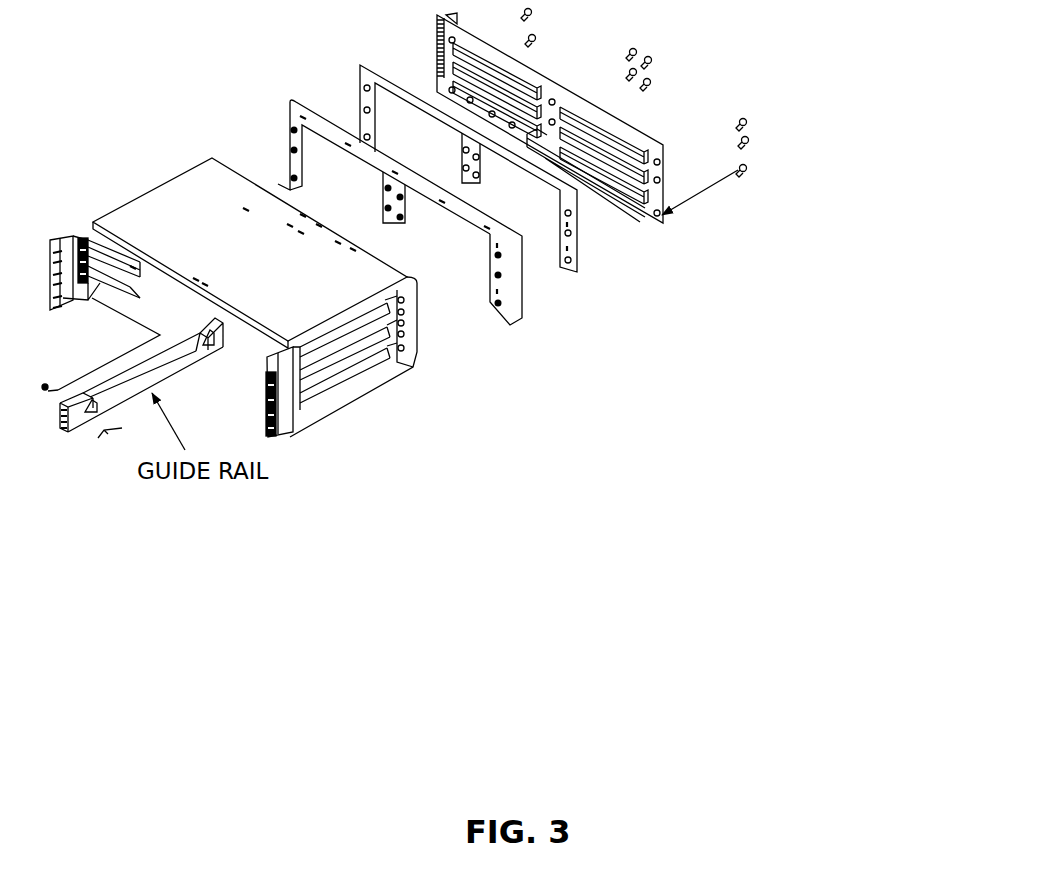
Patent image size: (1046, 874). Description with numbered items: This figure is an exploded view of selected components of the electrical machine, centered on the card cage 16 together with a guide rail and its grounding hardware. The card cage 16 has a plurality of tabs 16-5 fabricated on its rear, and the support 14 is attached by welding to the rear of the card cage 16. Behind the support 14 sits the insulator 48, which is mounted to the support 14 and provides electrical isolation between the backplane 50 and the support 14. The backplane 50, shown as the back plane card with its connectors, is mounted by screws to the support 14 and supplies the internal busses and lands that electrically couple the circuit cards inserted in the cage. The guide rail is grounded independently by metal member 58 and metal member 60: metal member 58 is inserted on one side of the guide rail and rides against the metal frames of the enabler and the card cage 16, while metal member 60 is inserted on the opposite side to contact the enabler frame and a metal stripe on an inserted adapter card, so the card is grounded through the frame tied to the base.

The support 14 is at (521, 304).
The card cage 16 is at (326, 421).
The tabs 16-5 is at (443, 348).
The insulator 48 is at (581, 248).
The backplane 50 is at (667, 172).
The metal member 58 is at (45, 384).
The metal member 60 is at (104, 434).